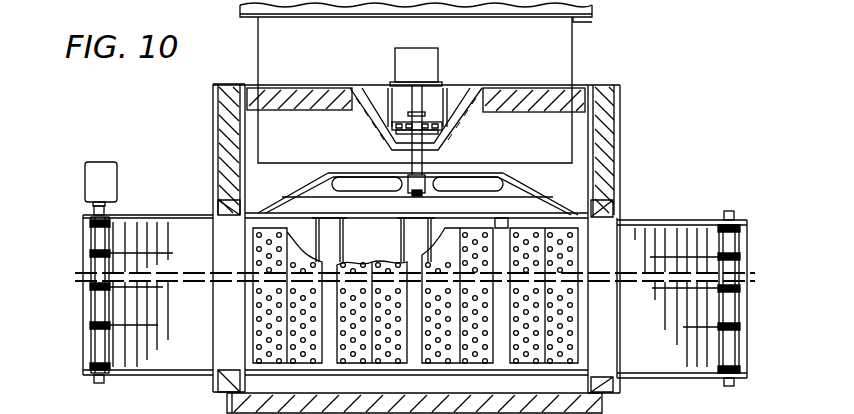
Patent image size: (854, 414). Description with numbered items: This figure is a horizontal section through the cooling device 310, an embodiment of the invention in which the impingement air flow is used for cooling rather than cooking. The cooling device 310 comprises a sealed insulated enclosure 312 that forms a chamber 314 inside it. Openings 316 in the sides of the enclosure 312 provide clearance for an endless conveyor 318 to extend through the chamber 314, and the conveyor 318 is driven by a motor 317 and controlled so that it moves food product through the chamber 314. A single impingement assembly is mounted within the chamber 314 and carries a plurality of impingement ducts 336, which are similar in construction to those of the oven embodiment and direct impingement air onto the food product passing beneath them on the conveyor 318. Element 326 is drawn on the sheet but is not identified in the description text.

The cooling device 310 is at (668, 105).
The sealed insulated enclosure 312 is at (213, 127).
The chamber 314 is at (272, 184).
The openings 316 is at (222, 340).
The motor 317 is at (104, 176).
The endless conveyor 318 is at (700, 233).
The air distribution hood 326 is at (565, 193).
The impingement ducts 336 is at (487, 335).